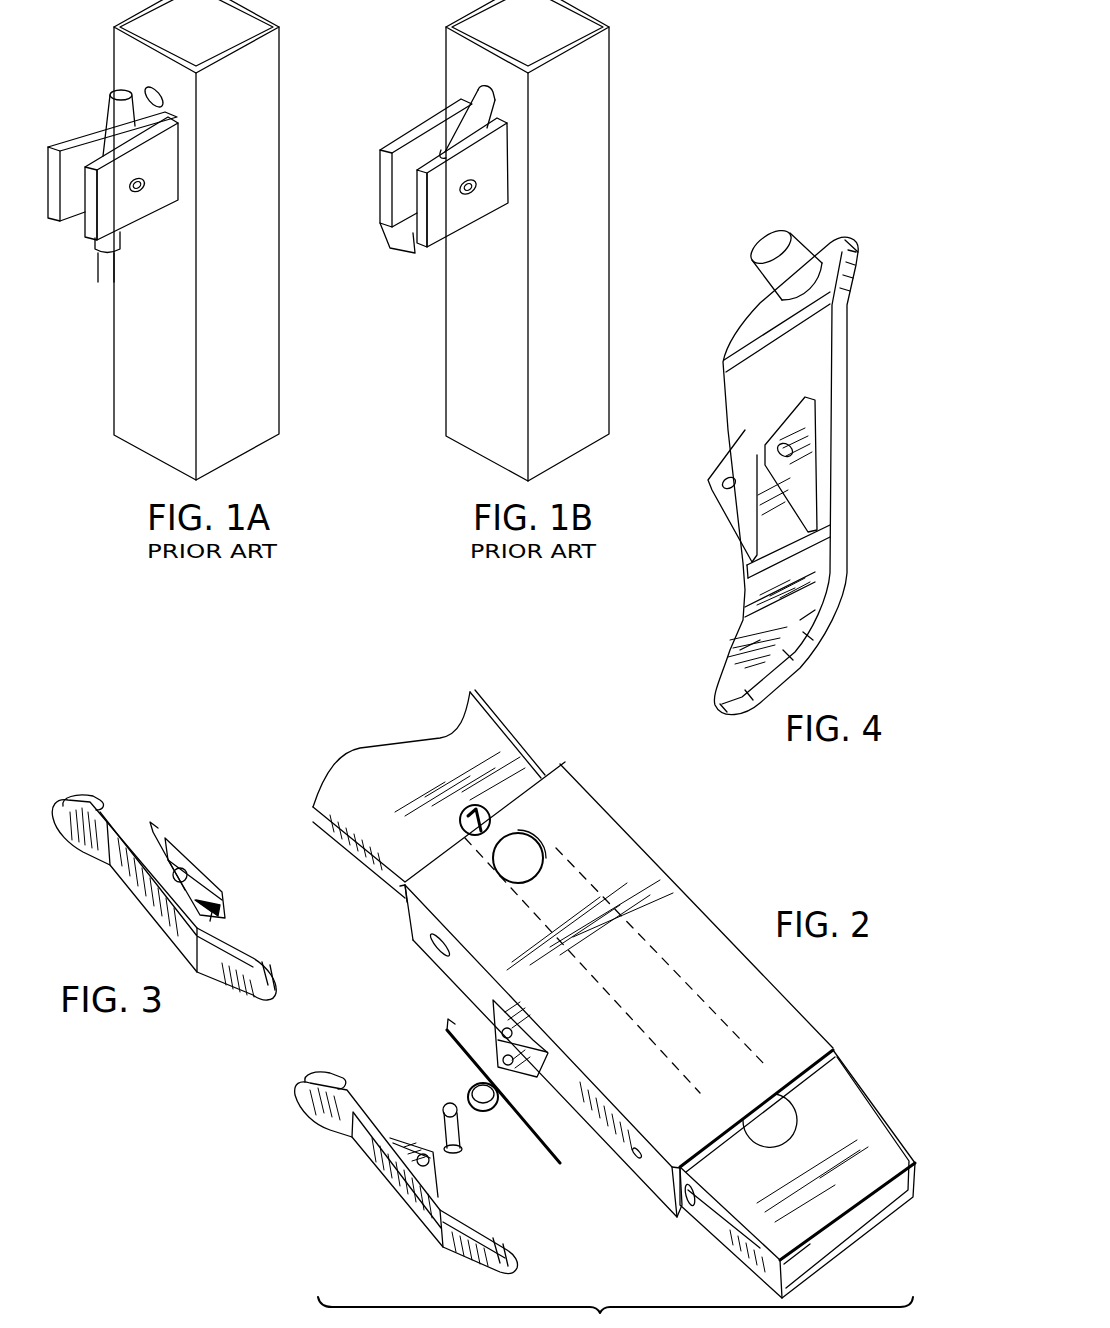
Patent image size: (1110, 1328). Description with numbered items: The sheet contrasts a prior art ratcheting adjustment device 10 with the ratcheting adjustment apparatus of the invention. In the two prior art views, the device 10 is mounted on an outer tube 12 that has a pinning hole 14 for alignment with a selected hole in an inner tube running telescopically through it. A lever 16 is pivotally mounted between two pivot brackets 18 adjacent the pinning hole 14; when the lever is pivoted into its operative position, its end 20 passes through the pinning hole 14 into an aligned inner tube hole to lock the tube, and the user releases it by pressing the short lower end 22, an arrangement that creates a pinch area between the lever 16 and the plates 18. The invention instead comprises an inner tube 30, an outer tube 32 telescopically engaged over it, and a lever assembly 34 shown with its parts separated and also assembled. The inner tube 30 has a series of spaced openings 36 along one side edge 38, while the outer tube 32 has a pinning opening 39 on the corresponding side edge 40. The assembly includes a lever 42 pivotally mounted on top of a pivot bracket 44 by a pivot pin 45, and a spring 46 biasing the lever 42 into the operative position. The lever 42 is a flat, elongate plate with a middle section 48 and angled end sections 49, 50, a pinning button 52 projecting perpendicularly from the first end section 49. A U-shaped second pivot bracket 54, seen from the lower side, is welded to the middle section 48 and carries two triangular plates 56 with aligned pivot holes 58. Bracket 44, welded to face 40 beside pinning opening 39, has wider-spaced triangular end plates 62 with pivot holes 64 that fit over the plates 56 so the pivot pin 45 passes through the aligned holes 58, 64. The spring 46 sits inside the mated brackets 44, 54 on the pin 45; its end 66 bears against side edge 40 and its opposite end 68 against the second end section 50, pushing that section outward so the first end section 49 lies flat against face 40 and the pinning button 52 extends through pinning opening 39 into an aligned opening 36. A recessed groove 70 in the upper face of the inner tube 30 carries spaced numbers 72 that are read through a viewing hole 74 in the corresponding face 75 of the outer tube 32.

In FIG. 1A, the ratcheting adjustment device 10 is at (67, 290).
In FIG. 1B, the ratcheting adjustment device 10 is at (421, 290).
In FIG. 1A, the outer tube 12 is at (271, 107).
In FIG. 1B, the outer tube 12 is at (606, 114).
In FIG. 1A, the pinning hole 14 is at (146, 90).
In FIG. 1B, the pinning hole 14 is at (480, 92).
In FIG. 1A, the lever 16 is at (115, 137).
In FIG. 1B, the lever 16 is at (410, 208).
In FIG. 1A, the pivot brackets 18 is at (54, 214).
In FIG. 1B, the pivot brackets 18 is at (389, 228).
In FIG. 1A, the end of the lever 20 is at (115, 92).
In FIG. 1B, the end of the lever 20 is at (492, 100).
In FIG. 1A, the lower end of the lever 22 is at (103, 252).
In FIG. 2, the inner tube 30 is at (845, 1120).
In FIG. 2, the outer tube 32 is at (674, 882).
In FIG. 3, the lever assembly 34 is at (92, 888).
In FIG. 2, the lever assembly 34 is at (582, 1190).
In FIG. 2, the spaced openings 36 is at (400, 889).
In FIG. 2, the side edge 38 is at (727, 1238).
In FIG. 2, the pinning opening 39 is at (418, 937).
In FIG. 2, the side edge 40 is at (602, 1106).
In FIG. 4, the lever 42 is at (858, 555).
In FIG. 2, the lever 42 is at (395, 1222).
In FIG. 2, the pivot bracket 44 is at (512, 1034).
In FIG. 3, the pivot pin 45 is at (184, 869).
In FIG. 2, the pivot pin 45 is at (446, 1104).
In FIG. 3, the spring 46 is at (228, 912).
In FIG. 2, the spring 46 is at (492, 1110).
In FIG. 4, the middle section 48 is at (829, 399).
In FIG. 3, the middle section 48 is at (160, 907).
In FIG. 2, the middle section 48 is at (392, 1182).
In FIG. 4, the first end section 49 is at (859, 270).
In FIG. 3, the first end section 49 is at (93, 838).
In FIG. 2, the first end section 49 is at (322, 1120).
In FIG. 4, the second end section 50 is at (740, 648).
In FIG. 3, the second end section 50 is at (260, 988).
In FIG. 2, the second end section 50 is at (490, 1235).
In FIG. 4, the pinning button 52 is at (760, 248).
In FIG. 3, the pinning button 52 is at (86, 797).
In FIG. 2, the pinning button 52 is at (334, 1076).
In FIG. 4, the second pivot bracket 54 is at (745, 560).
In FIG. 2, the second pivot bracket 54 is at (408, 1140).
In FIG. 4, the triangular plates 56 is at (785, 505).
In FIG. 3, the triangular plates 56 is at (190, 912).
In FIG. 2, the triangular plates 56 is at (430, 1184).
In FIG. 4, the pivot holes 58 is at (778, 445).
In FIG. 3, the end plates 62 is at (200, 895).
In FIG. 2, the end plates 62 is at (508, 1043).
In FIG. 2, the pivot holes 64 is at (487, 1013).
In FIG. 2, the end of the spring 66 is at (447, 1029).
In FIG. 2, the opposite end of the spring 68 is at (557, 1156).
In FIG. 2, the recessed groove 70 is at (785, 1103).
In FIG. 2, the spaced numbers 72 is at (525, 860).
In FIG. 2, the viewing hole 74 is at (543, 847).
In FIG. 2, the face 75 is at (640, 850).